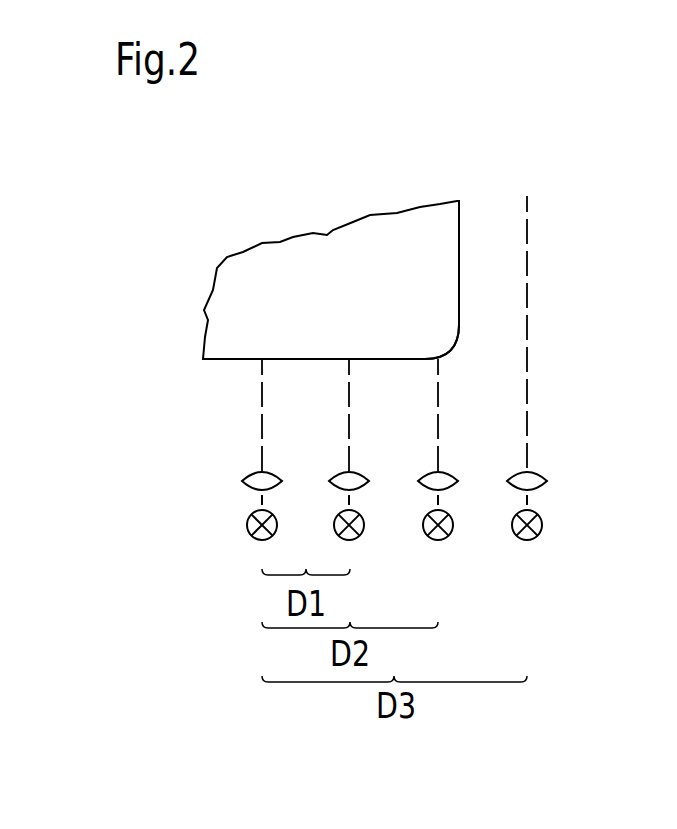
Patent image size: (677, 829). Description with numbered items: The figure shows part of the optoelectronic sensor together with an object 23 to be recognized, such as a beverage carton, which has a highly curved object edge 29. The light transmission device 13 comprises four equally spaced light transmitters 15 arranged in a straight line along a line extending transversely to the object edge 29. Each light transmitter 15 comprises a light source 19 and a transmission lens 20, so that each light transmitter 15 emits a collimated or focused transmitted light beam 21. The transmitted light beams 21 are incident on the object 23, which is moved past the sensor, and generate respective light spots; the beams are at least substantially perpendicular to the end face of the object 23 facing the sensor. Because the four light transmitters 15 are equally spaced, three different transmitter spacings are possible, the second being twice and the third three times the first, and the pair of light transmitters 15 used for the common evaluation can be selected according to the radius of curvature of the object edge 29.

The light transmission device 13 is at (172, 500).
The light transmitter 15 is at (378, 507).
The light source 19 is at (438, 540).
The transmission lens 20 is at (443, 478).
The transmitted light beam 21 is at (262, 407).
The object 23 is at (342, 318).
The object edge 29 is at (457, 354).